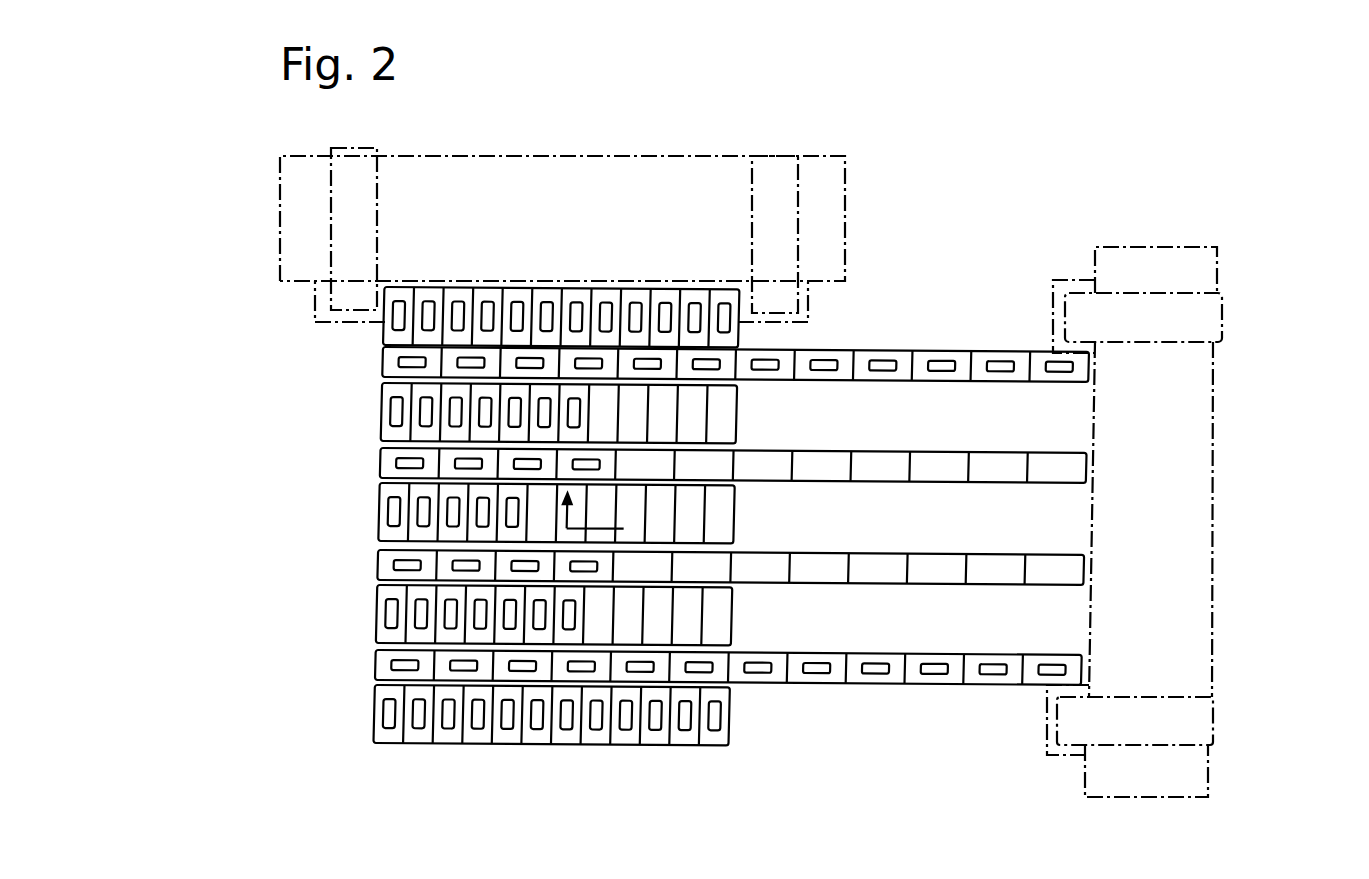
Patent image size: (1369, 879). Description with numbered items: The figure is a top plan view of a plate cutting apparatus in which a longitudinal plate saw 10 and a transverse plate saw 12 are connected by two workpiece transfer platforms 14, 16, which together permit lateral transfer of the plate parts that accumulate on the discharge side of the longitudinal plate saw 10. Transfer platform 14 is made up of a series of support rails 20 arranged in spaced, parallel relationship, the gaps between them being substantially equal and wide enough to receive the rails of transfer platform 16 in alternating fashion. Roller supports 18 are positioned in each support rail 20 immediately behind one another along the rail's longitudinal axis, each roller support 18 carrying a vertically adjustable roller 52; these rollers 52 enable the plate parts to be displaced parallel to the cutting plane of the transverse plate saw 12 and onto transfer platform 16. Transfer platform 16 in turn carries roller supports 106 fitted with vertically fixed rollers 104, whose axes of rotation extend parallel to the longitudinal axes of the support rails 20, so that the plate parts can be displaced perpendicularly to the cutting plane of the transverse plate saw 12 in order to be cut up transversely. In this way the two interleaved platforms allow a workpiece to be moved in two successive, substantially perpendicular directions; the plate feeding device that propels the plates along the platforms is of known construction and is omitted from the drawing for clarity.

The longitudinal plate saw 10 is at (1230, 316).
The transverse plate saw 12 is at (680, 154).
The workpiece transfer platform 14 is at (932, 697).
The workpiece transfer platform 16 is at (366, 711).
The roller support 18 is at (877, 357).
The support rail 20 is at (670, 493).
The vertically adjustable roller 52 is at (1000, 365).
The vertically fixed roller 104 is at (452, 328).
The roller support 106 is at (380, 490).